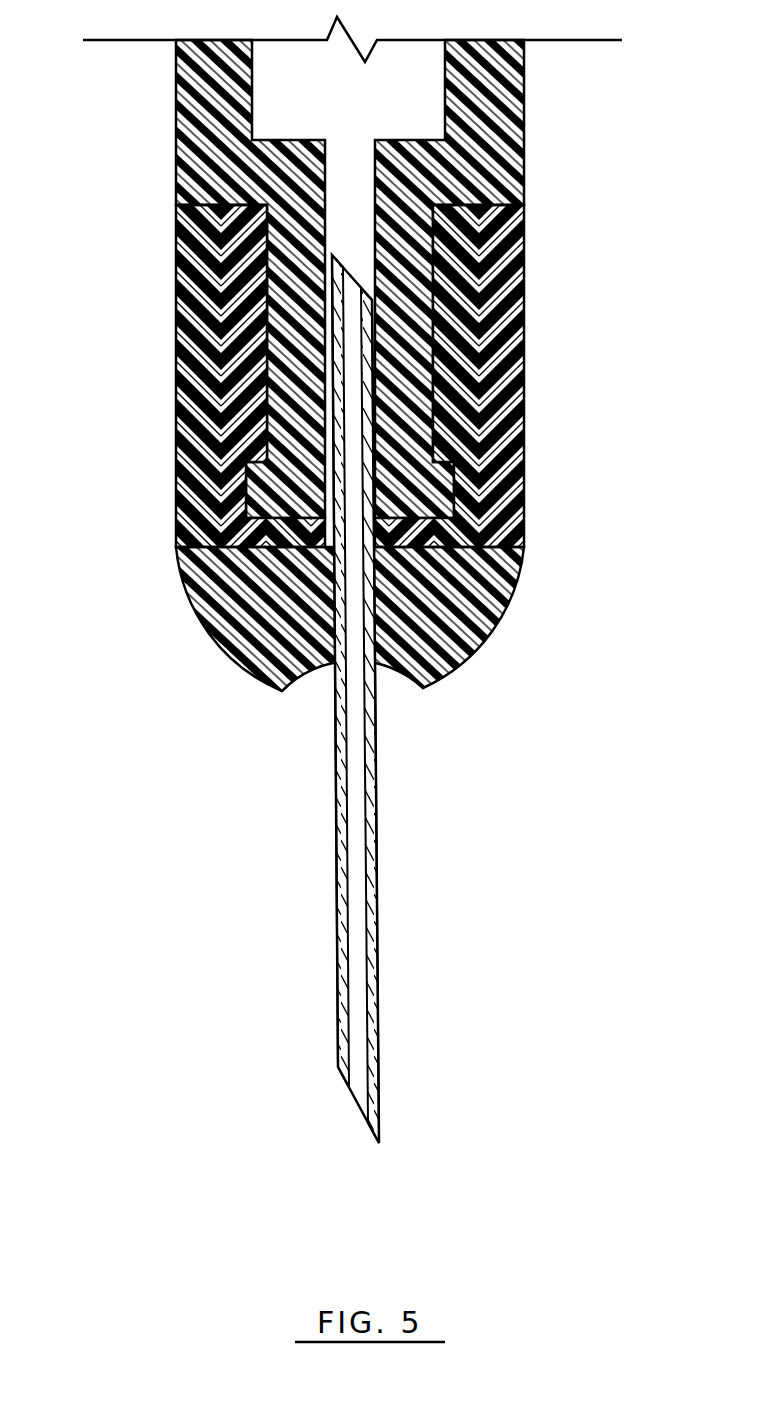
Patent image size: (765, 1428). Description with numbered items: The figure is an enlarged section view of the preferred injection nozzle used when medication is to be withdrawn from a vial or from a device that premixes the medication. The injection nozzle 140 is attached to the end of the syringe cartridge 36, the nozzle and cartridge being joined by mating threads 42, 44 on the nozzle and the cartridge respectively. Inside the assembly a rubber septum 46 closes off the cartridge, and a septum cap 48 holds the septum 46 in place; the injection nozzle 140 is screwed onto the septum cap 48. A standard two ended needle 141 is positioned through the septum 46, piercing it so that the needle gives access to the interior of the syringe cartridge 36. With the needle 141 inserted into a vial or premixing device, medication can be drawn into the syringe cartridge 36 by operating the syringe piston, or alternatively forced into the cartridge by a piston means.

The syringe cartridge 36 is at (525, 110).
The septum cap 48 is at (525, 208).
The mating threads 42 is at (200, 237).
The mating threads 44 is at (177, 322).
The septum 46 is at (522, 403).
The injection nozzle 140 is at (527, 488).
The two ended needle 141 is at (378, 988).